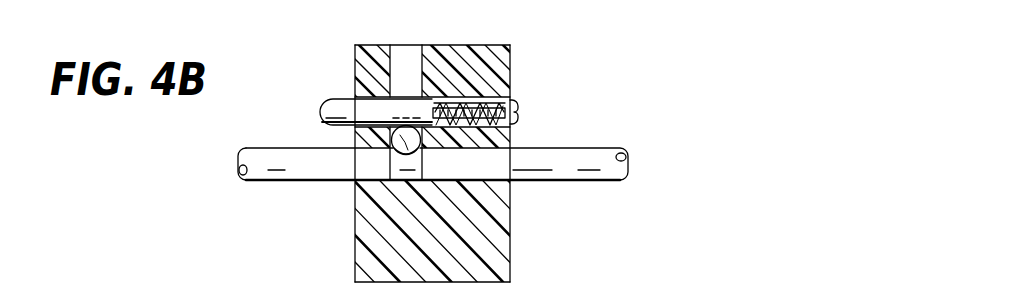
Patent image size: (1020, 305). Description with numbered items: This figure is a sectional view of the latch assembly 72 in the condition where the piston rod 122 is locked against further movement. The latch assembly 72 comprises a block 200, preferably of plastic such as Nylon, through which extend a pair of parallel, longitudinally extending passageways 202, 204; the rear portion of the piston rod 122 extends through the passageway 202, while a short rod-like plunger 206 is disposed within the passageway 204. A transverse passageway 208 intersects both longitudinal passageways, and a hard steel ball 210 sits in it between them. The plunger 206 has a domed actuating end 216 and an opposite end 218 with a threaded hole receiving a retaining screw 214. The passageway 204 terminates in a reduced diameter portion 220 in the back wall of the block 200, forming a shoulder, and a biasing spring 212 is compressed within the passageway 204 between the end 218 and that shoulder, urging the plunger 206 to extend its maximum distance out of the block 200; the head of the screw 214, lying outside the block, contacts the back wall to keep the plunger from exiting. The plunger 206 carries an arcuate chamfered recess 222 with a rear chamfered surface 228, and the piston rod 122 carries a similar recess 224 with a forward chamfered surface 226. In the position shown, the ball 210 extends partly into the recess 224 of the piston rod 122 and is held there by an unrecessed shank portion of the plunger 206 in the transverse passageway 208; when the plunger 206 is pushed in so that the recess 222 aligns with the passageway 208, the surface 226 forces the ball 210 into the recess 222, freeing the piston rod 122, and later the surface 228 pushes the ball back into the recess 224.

The latch assembly 72 is at (467, 262).
The piston rod 122 is at (263, 172).
The block 200 is at (356, 270).
The longitudinally extending passageway 202 is at (356, 205).
The longitudinally extending passageway 204 is at (357, 100).
The plunger 206 is at (345, 105).
The transverse passageway 208 is at (413, 52).
The ball 210 is at (423, 155).
The biasing spring 212 is at (488, 100).
The retaining screw 214 is at (513, 125).
The domed actuating end 216 is at (323, 110).
The opposite end of plunger 218 is at (430, 97).
The reduced diameter portion 220 is at (513, 97).
The arcuate chamfered recess 222 is at (382, 100).
The arcuate chamfered recess 224 is at (486, 203).
The forward chamfered surface 226 is at (388, 168).
The rear arcuate chamfered surface 228 is at (353, 133).